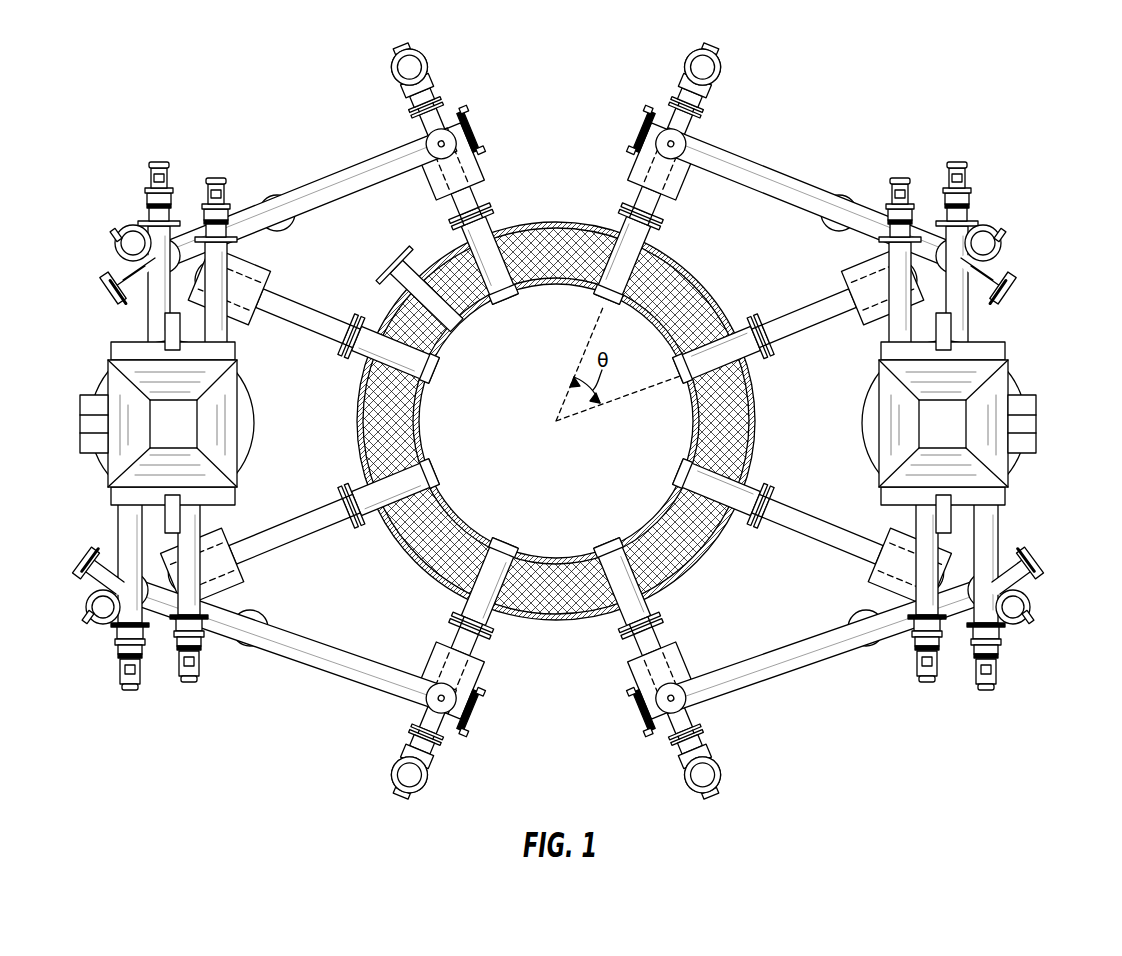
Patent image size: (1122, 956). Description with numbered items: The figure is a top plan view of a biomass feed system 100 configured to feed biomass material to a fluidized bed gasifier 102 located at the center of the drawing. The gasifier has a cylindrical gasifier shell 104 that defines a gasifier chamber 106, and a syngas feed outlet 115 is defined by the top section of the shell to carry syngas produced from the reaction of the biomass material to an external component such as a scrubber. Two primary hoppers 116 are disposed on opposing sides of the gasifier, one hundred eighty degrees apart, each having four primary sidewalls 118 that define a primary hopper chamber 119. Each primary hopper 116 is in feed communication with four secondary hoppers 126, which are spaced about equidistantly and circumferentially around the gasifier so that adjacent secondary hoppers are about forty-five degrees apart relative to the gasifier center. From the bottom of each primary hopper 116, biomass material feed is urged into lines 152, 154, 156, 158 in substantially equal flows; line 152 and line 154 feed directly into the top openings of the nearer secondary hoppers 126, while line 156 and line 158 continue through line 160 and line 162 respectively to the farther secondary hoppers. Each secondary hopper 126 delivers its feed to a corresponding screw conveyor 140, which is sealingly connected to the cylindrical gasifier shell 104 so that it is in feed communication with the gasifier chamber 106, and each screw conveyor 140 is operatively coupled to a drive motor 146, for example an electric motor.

The biomass feed system 100 is at (1018, 76).
The fluidized bed gasifier 102 is at (556, 632).
The cylindrical gasifier shell 104 is at (700, 565).
The gasifier chamber 106 is at (578, 483).
The syngas feed outlet 115 is at (392, 258).
The primary hopper 116 is at (560, 423).
The primary sidewall 118 is at (559, 423).
The primary hopper chamber 119 is at (172, 420).
The secondary hopper 126 is at (440, 192).
The screw conveyor 140 is at (613, 307).
The drive motor 146 is at (393, 64).
The line 152 is at (200, 523).
The line 154 is at (227, 334).
The line 156 is at (118, 549).
The line 158 is at (148, 312).
The line 160 is at (305, 662).
The line 162 is at (315, 188).